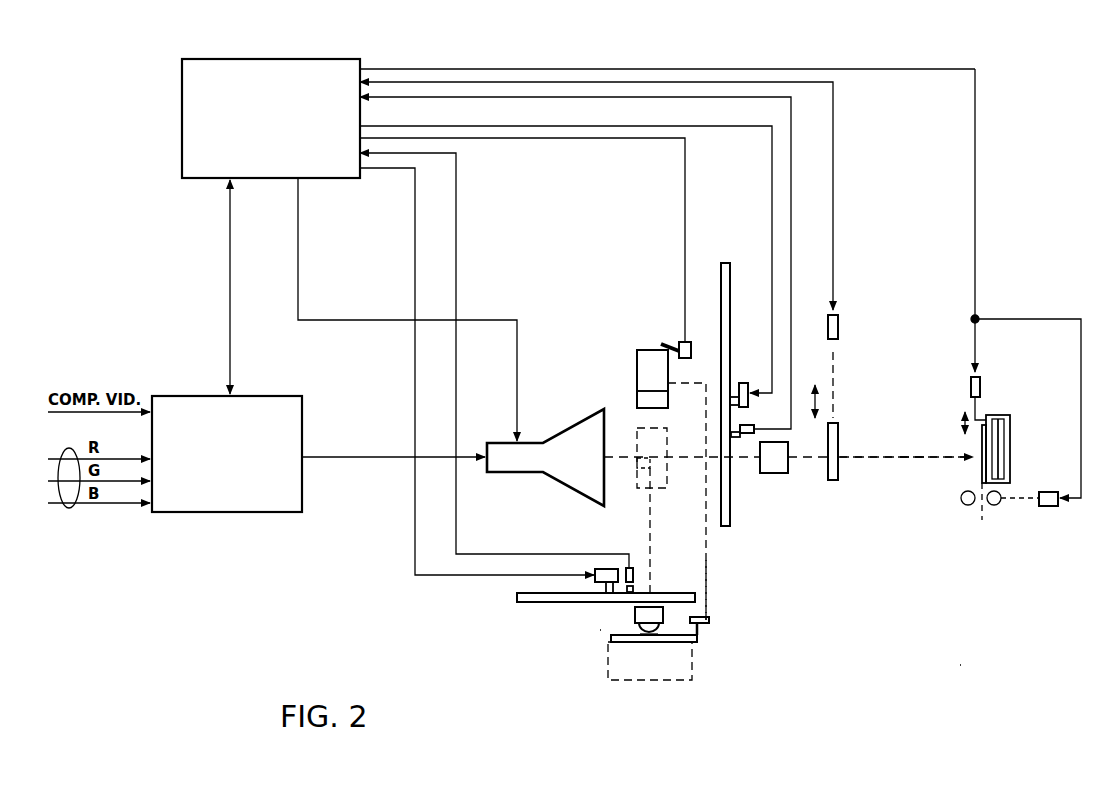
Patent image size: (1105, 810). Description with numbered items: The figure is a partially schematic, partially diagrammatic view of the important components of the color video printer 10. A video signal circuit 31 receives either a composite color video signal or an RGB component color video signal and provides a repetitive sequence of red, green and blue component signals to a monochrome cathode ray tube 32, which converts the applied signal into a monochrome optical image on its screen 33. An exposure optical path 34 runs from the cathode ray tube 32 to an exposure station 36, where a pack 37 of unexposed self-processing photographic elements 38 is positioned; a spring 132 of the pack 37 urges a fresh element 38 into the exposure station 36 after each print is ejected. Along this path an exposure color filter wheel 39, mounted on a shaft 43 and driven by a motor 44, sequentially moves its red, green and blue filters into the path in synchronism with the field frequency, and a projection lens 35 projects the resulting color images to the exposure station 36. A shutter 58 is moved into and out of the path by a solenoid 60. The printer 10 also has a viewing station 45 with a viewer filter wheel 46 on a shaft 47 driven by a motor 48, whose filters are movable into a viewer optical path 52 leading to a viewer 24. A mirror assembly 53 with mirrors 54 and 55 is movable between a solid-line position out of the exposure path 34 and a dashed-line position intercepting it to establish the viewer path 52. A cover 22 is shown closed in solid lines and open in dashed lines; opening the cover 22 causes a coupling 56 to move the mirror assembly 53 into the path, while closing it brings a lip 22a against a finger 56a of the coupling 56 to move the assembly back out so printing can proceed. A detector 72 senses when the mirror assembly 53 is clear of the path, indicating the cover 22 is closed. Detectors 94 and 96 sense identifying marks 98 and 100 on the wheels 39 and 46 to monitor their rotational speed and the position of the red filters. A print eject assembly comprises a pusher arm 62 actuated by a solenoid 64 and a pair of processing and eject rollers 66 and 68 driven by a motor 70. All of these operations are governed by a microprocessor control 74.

The printer 10 is at (963, 670).
The cover 22 is at (648, 645).
The lip 22a is at (700, 665).
The viewer 24 is at (635, 612).
The video signal circuit 31 is at (262, 400).
The monochrome cathode ray tube 32 is at (560, 486).
The screen 33 is at (608, 488).
The exposure optical path 34 is at (900, 458).
The projection lens 35 is at (776, 474).
The exposure station 36 is at (909, 513).
The pack 37 is at (1001, 416).
The self-processing photographic element 38 is at (982, 470).
The exposure color filter wheel 39 is at (727, 268).
The shaft 43 is at (736, 396).
The motor 44 is at (753, 386).
The viewing station 45 is at (594, 628).
The viewer filter wheel 46 is at (524, 606).
The shaft 47 is at (602, 592).
The motor 48 is at (602, 558).
The viewer optical path 52 is at (652, 531).
The mirror assembly 53 is at (632, 348).
The mirror 54 is at (637, 404).
The mirror 55 is at (637, 367).
The coupling 56 is at (712, 560).
The finger 56a is at (705, 628).
The shutter 58 is at (829, 480).
The solenoid 60 is at (840, 328).
The pusher arm 62 is at (973, 405).
The solenoid 64 is at (981, 392).
The processing and eject roller 66 is at (965, 505).
The processing and eject roller 68 is at (998, 505).
The motor 70 is at (1051, 506).
The detector 72 is at (693, 355).
The microprocessor control 74 is at (300, 60).
The detector 94 is at (754, 428).
The detector 96 is at (634, 577).
The identifying mark 98 is at (745, 445).
The identifying mark 100 is at (636, 592).
The spring 132 is at (1000, 455).